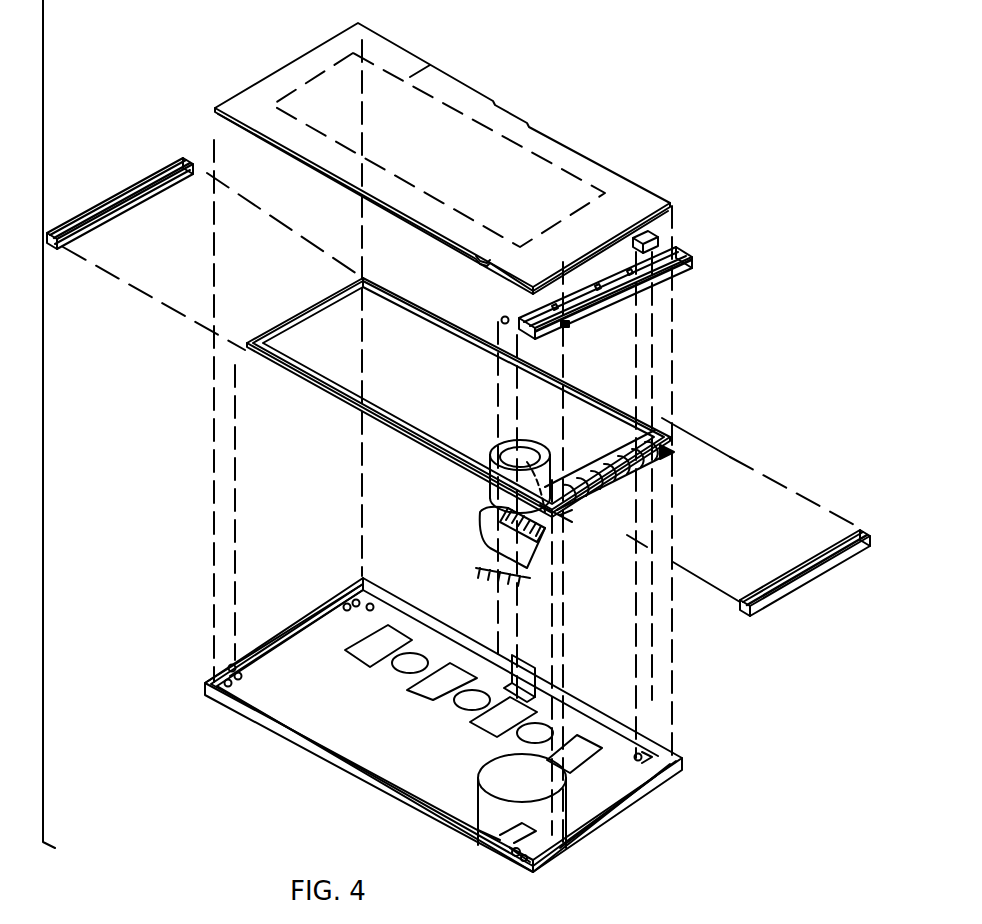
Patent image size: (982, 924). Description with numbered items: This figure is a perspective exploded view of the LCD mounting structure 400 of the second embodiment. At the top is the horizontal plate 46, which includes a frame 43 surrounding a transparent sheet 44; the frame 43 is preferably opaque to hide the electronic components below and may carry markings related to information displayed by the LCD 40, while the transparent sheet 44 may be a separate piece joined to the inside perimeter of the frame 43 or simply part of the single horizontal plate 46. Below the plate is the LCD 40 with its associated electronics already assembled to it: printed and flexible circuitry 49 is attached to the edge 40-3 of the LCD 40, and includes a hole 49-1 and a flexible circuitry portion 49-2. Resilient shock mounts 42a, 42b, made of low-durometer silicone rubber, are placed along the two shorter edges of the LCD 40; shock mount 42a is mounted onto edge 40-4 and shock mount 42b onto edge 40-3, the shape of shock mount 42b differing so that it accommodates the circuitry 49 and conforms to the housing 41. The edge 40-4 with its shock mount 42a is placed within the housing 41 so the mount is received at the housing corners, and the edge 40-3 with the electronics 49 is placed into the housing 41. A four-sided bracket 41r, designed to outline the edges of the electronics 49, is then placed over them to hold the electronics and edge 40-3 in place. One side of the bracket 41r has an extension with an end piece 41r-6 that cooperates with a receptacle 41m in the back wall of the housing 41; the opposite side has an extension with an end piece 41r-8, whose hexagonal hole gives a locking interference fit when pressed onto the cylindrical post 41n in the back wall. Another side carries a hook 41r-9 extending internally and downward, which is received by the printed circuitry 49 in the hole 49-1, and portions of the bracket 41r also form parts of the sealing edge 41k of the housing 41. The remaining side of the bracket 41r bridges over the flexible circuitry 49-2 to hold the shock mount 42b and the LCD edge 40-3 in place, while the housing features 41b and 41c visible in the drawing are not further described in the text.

The mounting structure 400 is at (51, 424).
The LCD 40 is at (330, 368).
The edge of LCD 40-3 is at (470, 495).
The edge of LCD 40-4 is at (384, 276).
The housing 41 is at (632, 826).
The engaging tab 41b is at (493, 849).
The standing tab 41c is at (526, 661).
The sealing edge 41k is at (303, 627).
The receptacle 41m is at (640, 752).
The cylindrical post 41n is at (507, 834).
The bracket 41r is at (666, 286).
The end piece 41r-6 is at (652, 229).
The end piece 41r-8 is at (500, 316).
The hook 41r-9 is at (566, 323).
The resilient shock mount 42a is at (152, 173).
The resilient shock mount 42b is at (822, 581).
The frame 43 is at (640, 190).
The transparent sheet 44 is at (508, 165).
The horizontal plate 46 is at (458, 78).
The printed and flexible circuitry 49 is at (628, 499).
The hole 49-1 is at (556, 521).
The flexible circuitry 49-2 is at (597, 478).